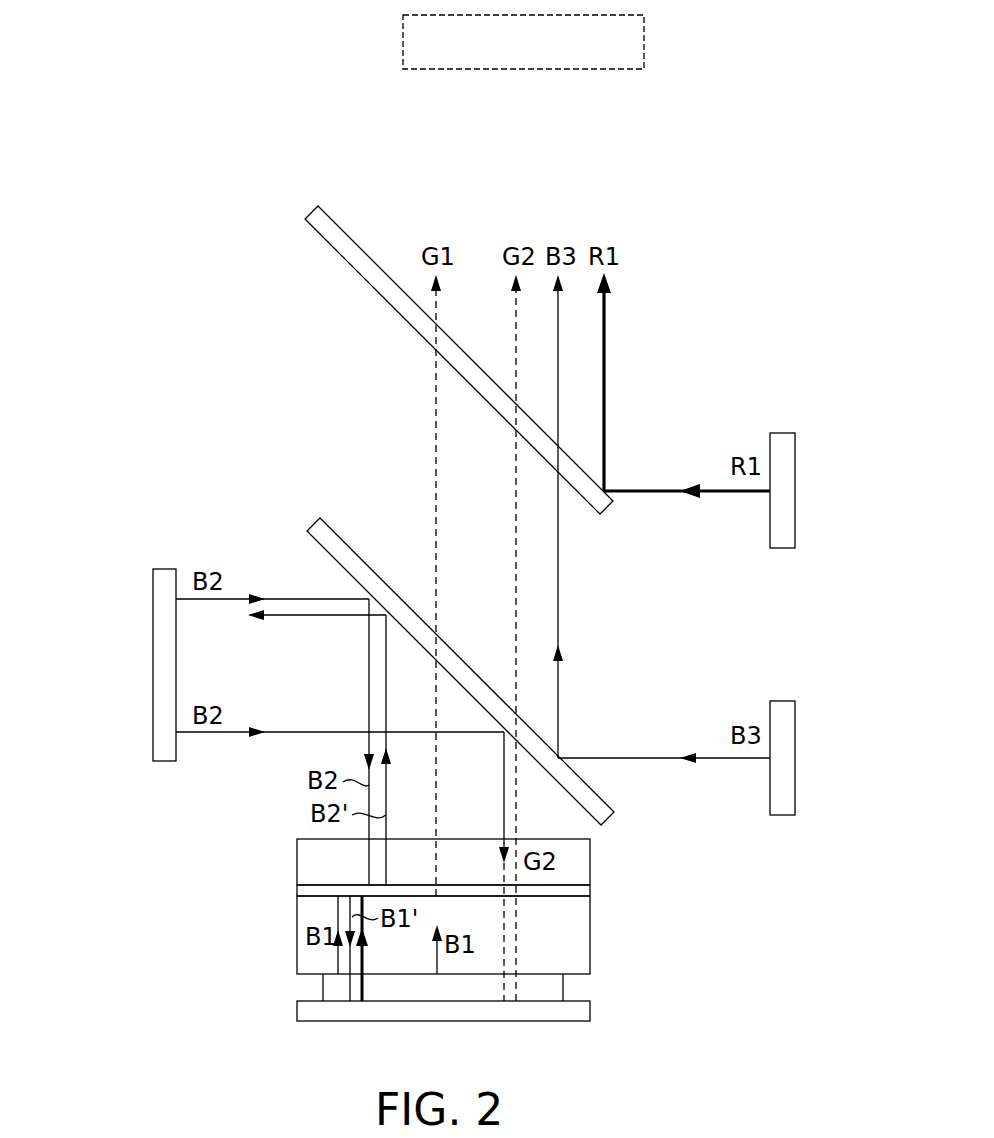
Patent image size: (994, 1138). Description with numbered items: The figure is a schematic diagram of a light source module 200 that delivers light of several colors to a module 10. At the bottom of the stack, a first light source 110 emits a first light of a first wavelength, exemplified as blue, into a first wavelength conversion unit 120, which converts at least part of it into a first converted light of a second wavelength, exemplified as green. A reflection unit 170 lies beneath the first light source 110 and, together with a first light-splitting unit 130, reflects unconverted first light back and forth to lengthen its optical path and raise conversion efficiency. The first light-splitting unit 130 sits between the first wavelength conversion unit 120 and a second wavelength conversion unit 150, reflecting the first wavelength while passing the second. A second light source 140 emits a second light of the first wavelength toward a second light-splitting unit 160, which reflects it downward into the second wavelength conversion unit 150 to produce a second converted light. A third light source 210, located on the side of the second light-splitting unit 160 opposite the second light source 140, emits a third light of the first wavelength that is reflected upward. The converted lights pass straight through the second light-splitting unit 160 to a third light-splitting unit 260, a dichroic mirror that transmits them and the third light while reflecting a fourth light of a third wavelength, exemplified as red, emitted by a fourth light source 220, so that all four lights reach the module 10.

The module 10 is at (644, 40).
The light source module 200 is at (302, 150).
The third light-splitting unit 260 is at (593, 500).
The second light-splitting unit 160 is at (594, 813).
The second light source 140 is at (163, 678).
The fourth light source 220 is at (782, 528).
The third light source 210 is at (782, 795).
The second wavelength conversion unit 150 is at (583, 869).
The first light-splitting unit 130 is at (583, 893).
The first wavelength conversion unit 120 is at (583, 930).
The first light source 110 is at (543, 988).
The reflection unit 170 is at (567, 1012).